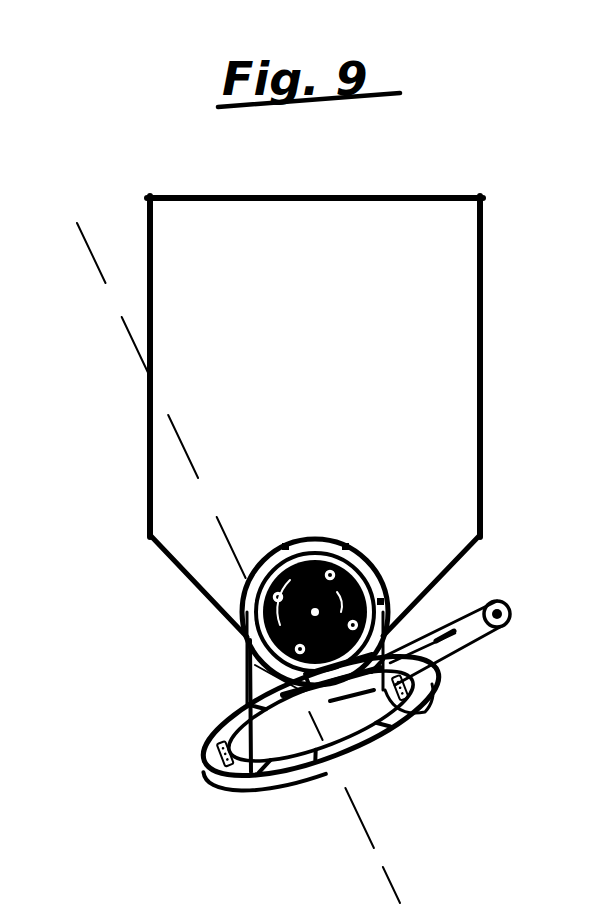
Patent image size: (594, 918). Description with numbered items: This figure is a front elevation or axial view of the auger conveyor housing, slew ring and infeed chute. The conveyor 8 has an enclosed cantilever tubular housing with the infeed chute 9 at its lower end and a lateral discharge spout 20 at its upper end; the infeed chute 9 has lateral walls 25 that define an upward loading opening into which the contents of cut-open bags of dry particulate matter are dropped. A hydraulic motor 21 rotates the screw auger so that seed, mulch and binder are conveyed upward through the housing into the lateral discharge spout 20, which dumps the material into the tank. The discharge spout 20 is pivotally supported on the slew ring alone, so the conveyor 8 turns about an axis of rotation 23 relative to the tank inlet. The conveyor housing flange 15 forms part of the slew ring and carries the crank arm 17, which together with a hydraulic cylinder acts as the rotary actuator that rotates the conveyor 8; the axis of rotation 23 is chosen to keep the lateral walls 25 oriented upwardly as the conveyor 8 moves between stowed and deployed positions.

The conveyor 8 is at (161, 400).
The infeed chute 9 is at (483, 262).
The conveyor housing flange 15 is at (413, 716).
The crank arm 17 is at (467, 610).
The lateral discharge spout 20 is at (303, 800).
The hydraulic motor 21 is at (355, 575).
The axis of rotation 23 is at (367, 832).
The lateral walls 25 is at (483, 370).